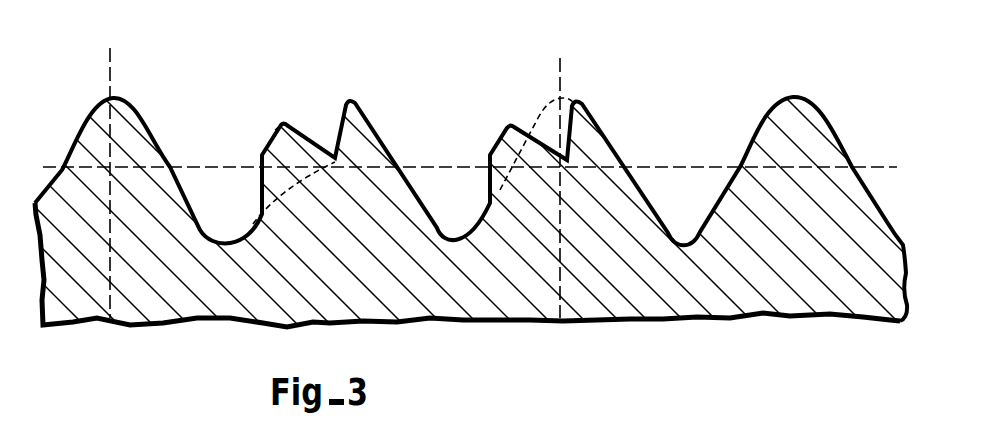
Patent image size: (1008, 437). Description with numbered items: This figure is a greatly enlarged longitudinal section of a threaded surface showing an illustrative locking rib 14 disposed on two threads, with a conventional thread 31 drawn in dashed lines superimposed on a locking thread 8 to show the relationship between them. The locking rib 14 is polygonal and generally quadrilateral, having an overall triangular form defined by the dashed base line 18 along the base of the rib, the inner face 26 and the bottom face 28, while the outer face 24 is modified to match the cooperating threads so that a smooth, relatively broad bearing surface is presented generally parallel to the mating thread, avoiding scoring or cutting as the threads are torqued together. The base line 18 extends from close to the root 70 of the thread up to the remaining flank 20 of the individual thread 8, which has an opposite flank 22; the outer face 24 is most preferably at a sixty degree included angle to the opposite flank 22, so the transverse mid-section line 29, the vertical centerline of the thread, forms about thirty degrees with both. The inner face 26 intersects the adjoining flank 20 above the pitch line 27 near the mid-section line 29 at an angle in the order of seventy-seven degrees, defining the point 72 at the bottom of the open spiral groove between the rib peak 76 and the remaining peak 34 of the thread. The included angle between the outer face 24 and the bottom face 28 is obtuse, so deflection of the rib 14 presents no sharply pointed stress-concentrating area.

The thread 8 is at (373, 121).
The locking rib 14 is at (293, 120).
The base line 18 is at (255, 221).
The remaining flank 20 is at (352, 102).
The opposite flank 22 is at (397, 167).
The outer face 24 is at (262, 148).
The inner face 26 is at (303, 137).
The pitch line 27 is at (897, 164).
The bottom face 28 is at (261, 163).
The transverse mid-section line 29 is at (110, 66).
The conventional thread 31 is at (67, 142).
The remaining peak 34 is at (367, 110).
The root 70 is at (222, 240).
The point 72 is at (335, 157).
The rib peak 76 is at (282, 125).